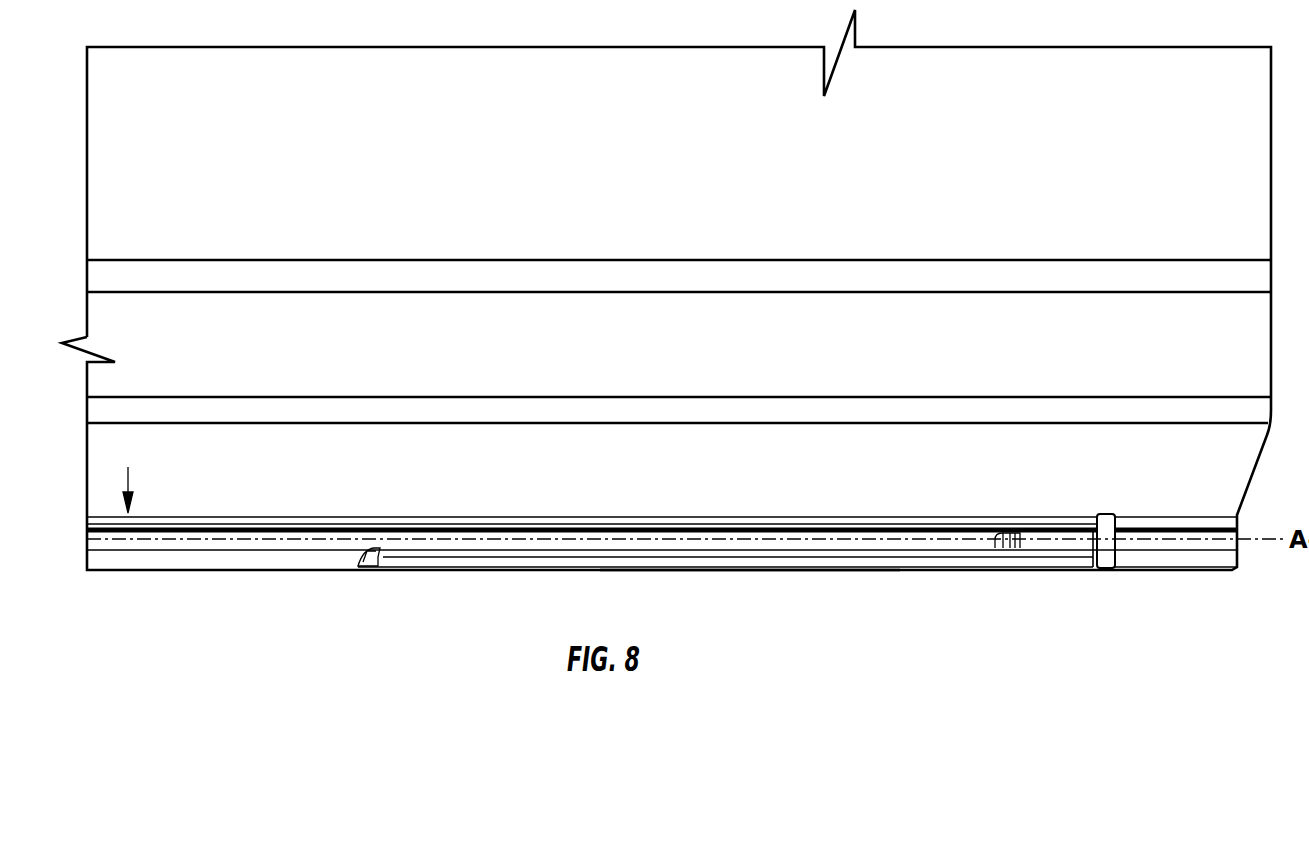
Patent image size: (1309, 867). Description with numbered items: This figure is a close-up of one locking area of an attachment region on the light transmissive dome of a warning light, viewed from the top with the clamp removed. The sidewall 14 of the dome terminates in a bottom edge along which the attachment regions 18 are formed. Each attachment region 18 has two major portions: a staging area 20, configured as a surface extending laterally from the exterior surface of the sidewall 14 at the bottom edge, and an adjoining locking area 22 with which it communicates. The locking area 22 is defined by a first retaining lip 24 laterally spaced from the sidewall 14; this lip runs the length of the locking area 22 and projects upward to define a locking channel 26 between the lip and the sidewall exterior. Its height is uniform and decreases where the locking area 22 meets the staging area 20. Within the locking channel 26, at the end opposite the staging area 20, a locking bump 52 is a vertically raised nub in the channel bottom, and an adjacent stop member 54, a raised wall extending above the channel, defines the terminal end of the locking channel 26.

The sidewall 14 is at (248, 475).
The attachment region 18 is at (443, 625).
The staging area 20 is at (180, 560).
The locking area 22 is at (738, 645).
The first retaining lip 24 is at (522, 565).
The locking channel 26 is at (765, 543).
The locking bump 52 is at (1020, 545).
The stop member 54 is at (1110, 543).